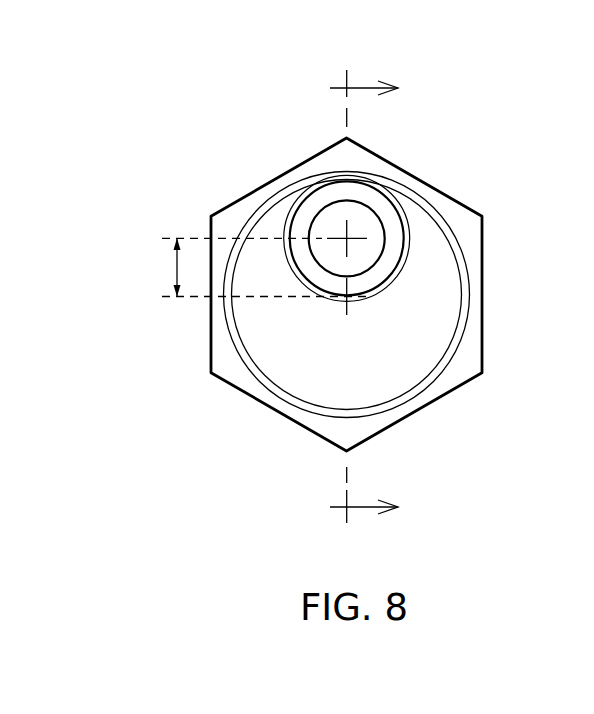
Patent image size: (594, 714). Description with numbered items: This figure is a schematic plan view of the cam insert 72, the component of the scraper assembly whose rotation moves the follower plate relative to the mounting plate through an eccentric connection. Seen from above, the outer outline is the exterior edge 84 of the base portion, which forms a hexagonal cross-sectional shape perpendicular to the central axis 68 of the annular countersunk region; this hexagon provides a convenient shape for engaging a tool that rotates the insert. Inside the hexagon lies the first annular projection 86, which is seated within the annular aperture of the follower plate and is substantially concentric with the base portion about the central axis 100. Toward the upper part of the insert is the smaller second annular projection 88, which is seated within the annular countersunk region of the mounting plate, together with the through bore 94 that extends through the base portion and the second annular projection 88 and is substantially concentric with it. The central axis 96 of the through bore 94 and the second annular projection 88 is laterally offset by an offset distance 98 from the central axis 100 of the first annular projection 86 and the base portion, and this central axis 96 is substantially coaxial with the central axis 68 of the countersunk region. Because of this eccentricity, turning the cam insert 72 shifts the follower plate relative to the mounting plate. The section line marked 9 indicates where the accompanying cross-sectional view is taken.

The cam insert 72 is at (322, 241).
The exterior edge 84 is at (251, 190).
The first annular projection 86 is at (427, 307).
The second annular projection 88 is at (392, 229).
The central axis 68 is at (408, 197).
The central axis 96 is at (367, 218).
The through bore 94 is at (321, 254).
The offset distance 98 is at (177, 264).
The central axis 100 is at (350, 296).
The section line 9 is at (364, 297).